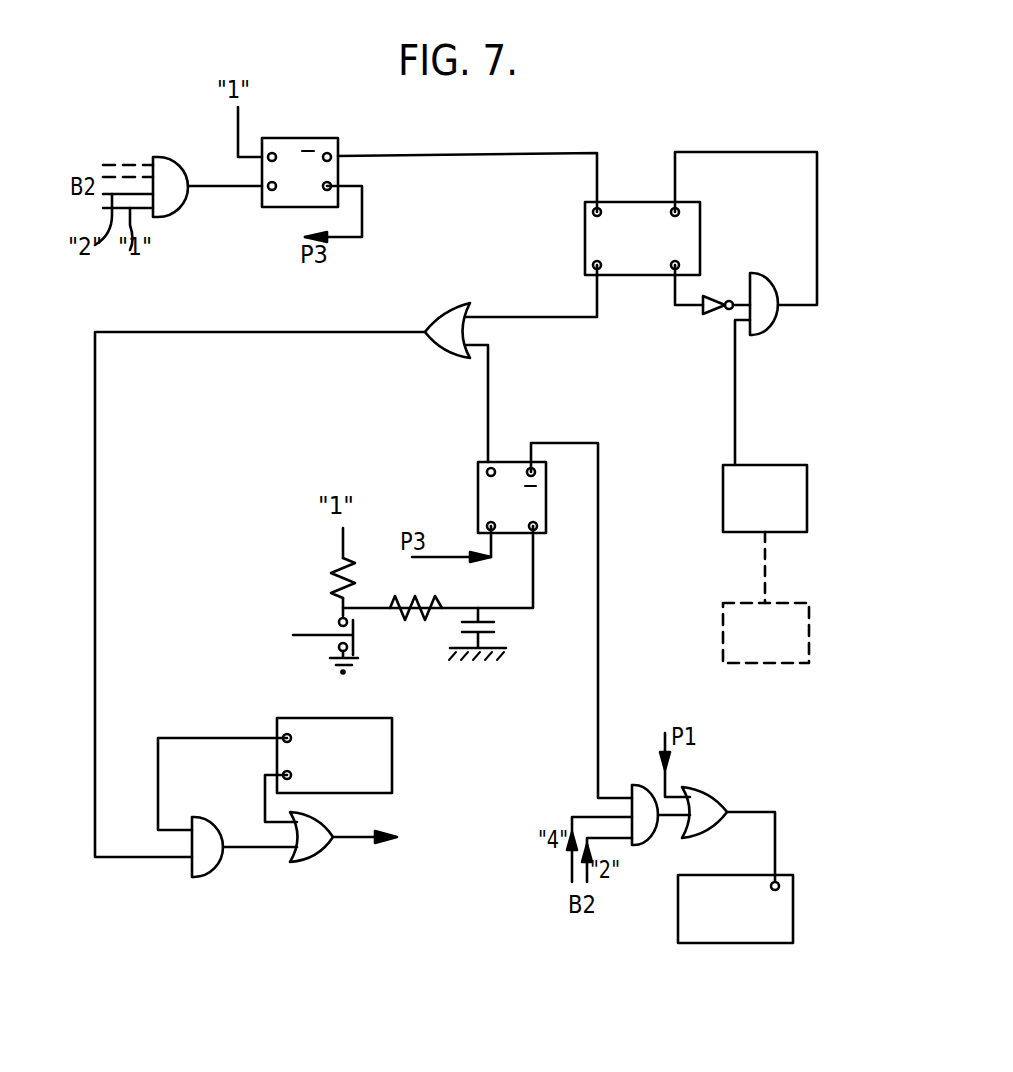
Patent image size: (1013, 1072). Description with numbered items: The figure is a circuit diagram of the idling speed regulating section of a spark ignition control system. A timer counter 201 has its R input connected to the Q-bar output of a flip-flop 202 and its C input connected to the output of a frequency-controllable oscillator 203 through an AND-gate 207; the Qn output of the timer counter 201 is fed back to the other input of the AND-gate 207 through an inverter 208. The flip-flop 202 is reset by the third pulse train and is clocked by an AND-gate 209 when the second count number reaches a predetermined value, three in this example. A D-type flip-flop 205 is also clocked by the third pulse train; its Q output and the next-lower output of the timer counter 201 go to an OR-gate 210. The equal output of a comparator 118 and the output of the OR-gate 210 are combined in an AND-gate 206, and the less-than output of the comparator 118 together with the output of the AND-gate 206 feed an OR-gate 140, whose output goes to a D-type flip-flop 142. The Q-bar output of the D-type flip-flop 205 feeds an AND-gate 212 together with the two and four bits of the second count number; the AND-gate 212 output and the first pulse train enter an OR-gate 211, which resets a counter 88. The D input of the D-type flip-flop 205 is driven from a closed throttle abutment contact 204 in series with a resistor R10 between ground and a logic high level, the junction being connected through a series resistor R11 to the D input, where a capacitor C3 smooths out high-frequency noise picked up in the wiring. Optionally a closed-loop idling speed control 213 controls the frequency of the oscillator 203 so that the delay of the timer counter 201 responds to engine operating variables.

The flip-flop 202 is at (311, 138).
The AND-gate 209 is at (170, 203).
The timer counter 201 is at (643, 202).
The inverter 208 is at (706, 310).
The AND-gate 207 is at (760, 322).
The OR-gate 210 is at (447, 303).
The D-type flip-flop 205 is at (478, 503).
The resistor R10 is at (336, 575).
The series resistor R11 is at (436, 604).
The capacitor C3 is at (486, 628).
The closed throttle abutment contact 204 is at (326, 620).
The frequency-controllable oscillator 203 is at (795, 478).
The closed-loop idling speed control 213 is at (808, 633).
The comparator 118 is at (331, 718).
The AND-gate 206 is at (205, 870).
The OR-gate 140 is at (314, 862).
The D-type flip-flop 142 is at (396, 853).
The AND-gate 212 is at (648, 842).
The OR-gate 211 is at (708, 792).
The counter 88 is at (780, 928).